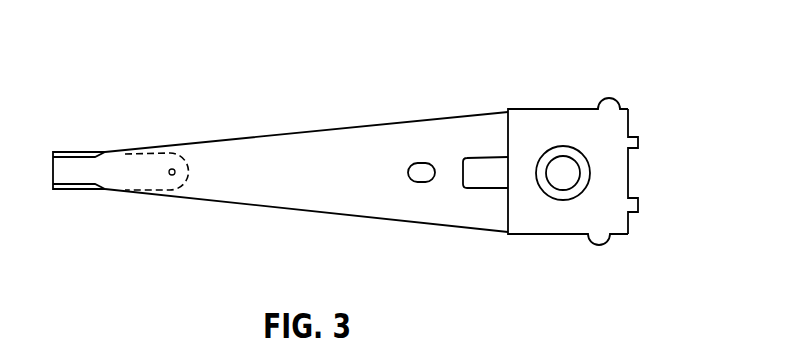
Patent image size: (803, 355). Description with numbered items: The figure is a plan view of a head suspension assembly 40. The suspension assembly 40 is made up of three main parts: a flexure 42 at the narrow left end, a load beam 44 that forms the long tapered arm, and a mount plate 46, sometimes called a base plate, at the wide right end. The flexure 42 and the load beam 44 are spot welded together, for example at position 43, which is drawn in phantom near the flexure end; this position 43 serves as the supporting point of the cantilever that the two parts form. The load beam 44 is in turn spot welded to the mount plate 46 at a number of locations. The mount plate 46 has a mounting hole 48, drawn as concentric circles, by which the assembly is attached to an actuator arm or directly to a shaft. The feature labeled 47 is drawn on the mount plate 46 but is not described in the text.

The suspension assembly 40 is at (389, 75).
The flexure 42 is at (93, 152).
The position 43 is at (172, 168).
The load beam 44 is at (328, 130).
The mount plate 46 is at (555, 108).
The side tabs 47 is at (607, 135).
The mounting hole 48 is at (565, 144).